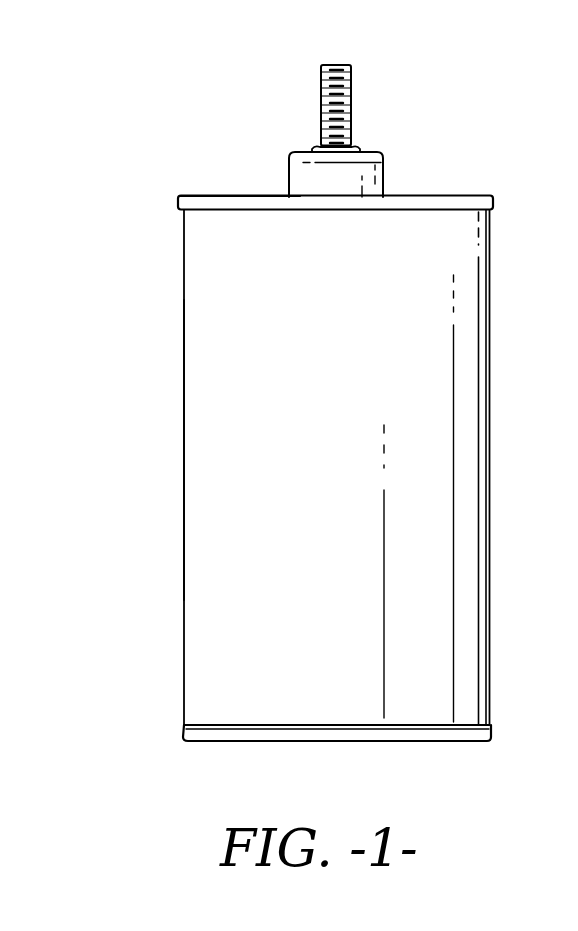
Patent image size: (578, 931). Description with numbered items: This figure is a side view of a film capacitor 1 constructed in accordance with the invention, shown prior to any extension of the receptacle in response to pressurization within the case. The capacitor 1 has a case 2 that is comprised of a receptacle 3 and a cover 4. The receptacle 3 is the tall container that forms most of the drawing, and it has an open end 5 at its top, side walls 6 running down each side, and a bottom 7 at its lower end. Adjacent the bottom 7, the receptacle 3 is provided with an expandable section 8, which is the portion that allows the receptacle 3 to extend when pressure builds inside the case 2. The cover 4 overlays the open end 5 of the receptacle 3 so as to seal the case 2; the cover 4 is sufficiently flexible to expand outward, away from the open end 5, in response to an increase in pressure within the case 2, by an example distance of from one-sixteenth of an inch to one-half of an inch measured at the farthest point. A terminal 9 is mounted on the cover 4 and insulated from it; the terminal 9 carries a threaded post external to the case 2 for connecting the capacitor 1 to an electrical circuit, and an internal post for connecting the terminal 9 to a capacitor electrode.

The capacitor 1 is at (498, 310).
The case 2 is at (353, 25).
The receptacle 3 is at (465, 567).
The cover 4 is at (423, 196).
The open end 5 is at (210, 196).
The side walls 6 is at (210, 470).
The bottom 7 is at (417, 742).
The expandable section 8 is at (488, 728).
The terminal 9 is at (310, 141).